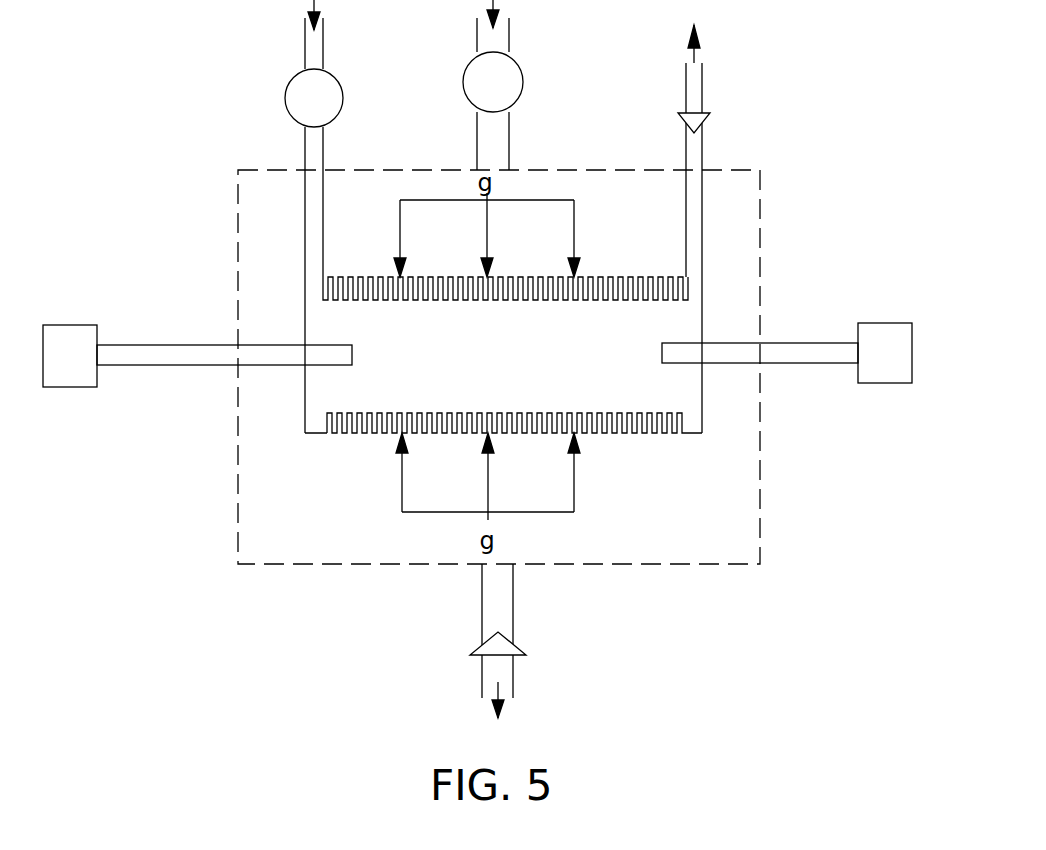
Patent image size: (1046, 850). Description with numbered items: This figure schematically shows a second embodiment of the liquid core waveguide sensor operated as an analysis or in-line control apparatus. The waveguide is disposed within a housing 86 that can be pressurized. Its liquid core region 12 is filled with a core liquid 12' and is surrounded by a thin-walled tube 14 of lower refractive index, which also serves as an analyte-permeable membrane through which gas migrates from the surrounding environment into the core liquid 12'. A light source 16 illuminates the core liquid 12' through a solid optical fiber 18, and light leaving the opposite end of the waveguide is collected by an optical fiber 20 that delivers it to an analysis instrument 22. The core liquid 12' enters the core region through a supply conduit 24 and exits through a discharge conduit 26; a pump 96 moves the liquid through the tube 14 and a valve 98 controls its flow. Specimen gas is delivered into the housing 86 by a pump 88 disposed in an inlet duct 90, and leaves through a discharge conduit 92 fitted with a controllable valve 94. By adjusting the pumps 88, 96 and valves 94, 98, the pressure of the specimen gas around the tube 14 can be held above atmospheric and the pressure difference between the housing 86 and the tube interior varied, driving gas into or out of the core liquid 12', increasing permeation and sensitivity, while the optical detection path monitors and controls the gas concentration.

The liquid core region 12 is at (505, 321).
The liquid material 12' is at (516, 452).
The tube 14 is at (341, 435).
The light source 16 is at (84, 366).
The solid optical fiber 18 is at (176, 367).
The optical fiber 20 is at (800, 343).
The analysis instrument 22 is at (899, 364).
The supply conduit 24 is at (305, 42).
The discharge conduit 26 is at (703, 86).
The housing 86 is at (776, 498).
The pump 88 is at (520, 66).
The inlet duct 90 is at (510, 146).
The discharge conduit 92 is at (515, 618).
The valve 94 is at (478, 648).
The pump 96 is at (286, 96).
The valve 98 is at (708, 118).